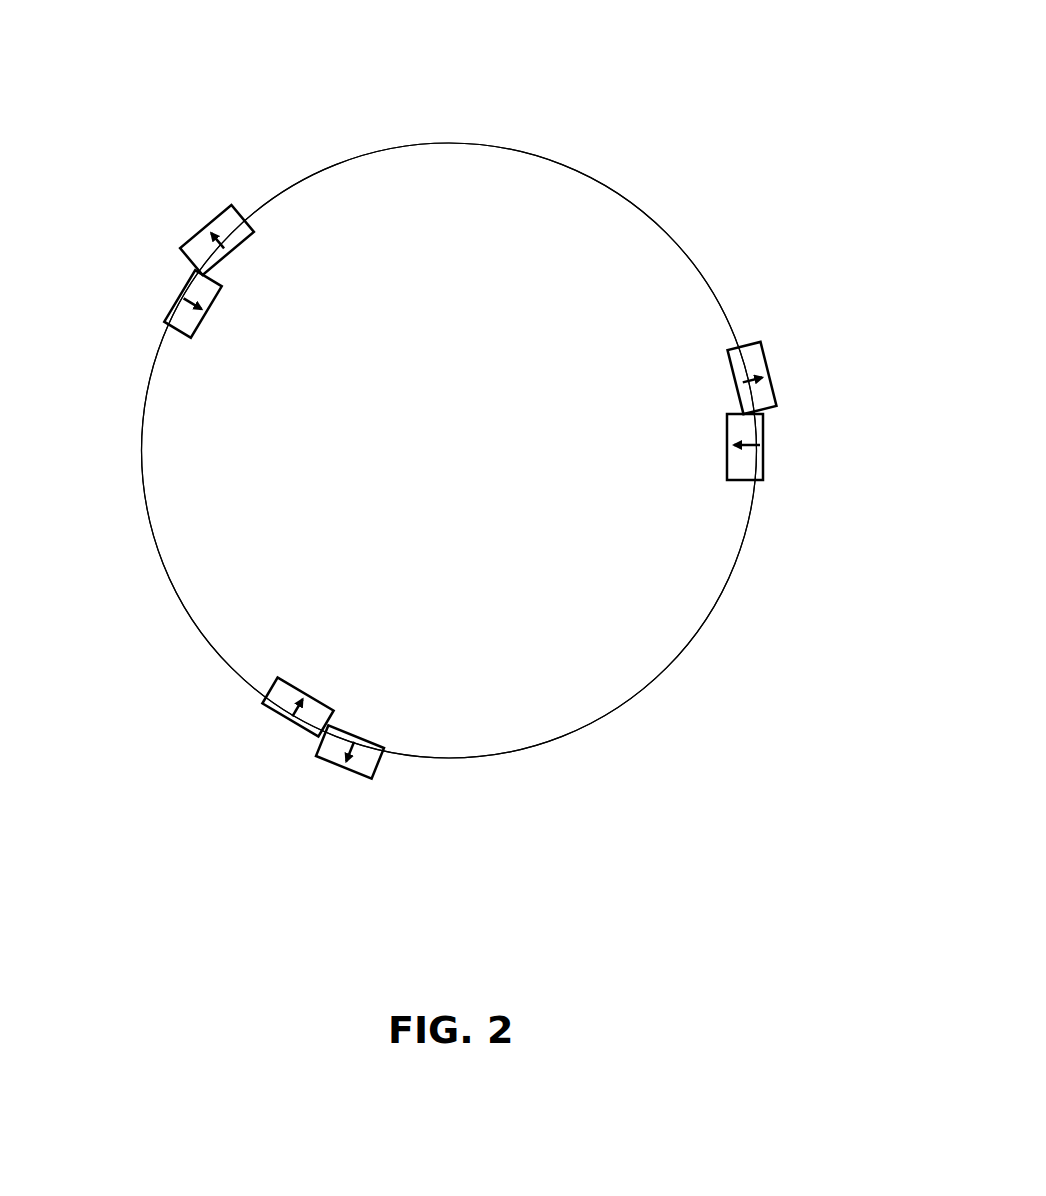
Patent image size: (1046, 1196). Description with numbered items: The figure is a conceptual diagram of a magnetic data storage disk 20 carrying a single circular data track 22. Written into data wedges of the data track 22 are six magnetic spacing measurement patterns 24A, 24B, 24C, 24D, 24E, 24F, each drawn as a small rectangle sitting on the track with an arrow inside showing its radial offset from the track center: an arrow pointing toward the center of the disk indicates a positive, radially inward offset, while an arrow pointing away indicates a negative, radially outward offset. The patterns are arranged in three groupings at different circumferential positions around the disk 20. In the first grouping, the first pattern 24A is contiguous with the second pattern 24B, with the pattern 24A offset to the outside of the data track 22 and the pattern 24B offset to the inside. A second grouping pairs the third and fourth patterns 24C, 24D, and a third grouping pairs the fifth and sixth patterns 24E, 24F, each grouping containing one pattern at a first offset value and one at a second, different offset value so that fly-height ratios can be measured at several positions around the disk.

The magnetic data storage disk 20 is at (628, 98).
The data track 22 is at (705, 275).
The first magnetic spacing measurement pattern 24A is at (778, 398).
The second magnetic spacing measurement pattern 24B is at (767, 473).
The third magnetic spacing measurement pattern 24C is at (323, 762).
The fourth magnetic spacing measurement pattern 24D is at (270, 713).
The fifth magnetic spacing measurement pattern 24E is at (162, 320).
The sixth magnetic spacing measurement pattern 24F is at (187, 250).